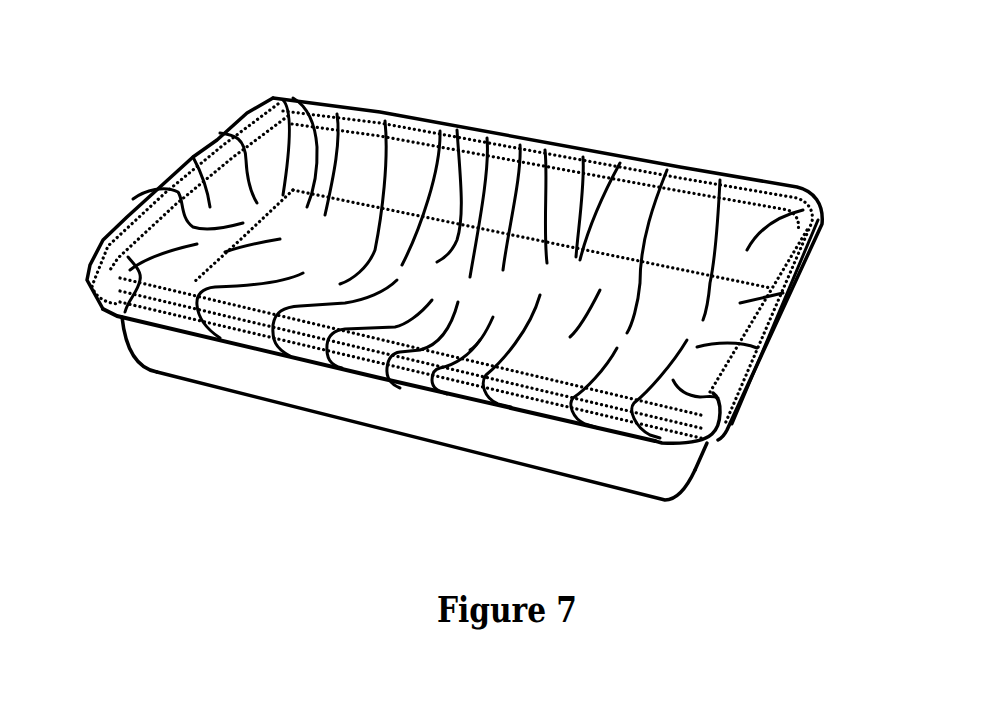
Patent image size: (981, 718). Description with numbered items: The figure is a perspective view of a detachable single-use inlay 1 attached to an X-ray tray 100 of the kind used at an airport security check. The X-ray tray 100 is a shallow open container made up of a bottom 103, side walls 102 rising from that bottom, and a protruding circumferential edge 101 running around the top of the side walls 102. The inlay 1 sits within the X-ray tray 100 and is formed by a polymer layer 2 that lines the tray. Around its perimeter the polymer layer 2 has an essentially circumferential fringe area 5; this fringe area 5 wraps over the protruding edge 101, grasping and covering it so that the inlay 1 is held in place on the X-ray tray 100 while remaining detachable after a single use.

The detachable single-use inlay 1 is at (273, 98).
The polymer layer 2 is at (195, 153).
The fringe area 5 is at (357, 368).
The X-ray tray 100 is at (258, 376).
The edge 101 is at (692, 180).
The side walls 102 is at (578, 452).
The bottom 103 is at (457, 130).